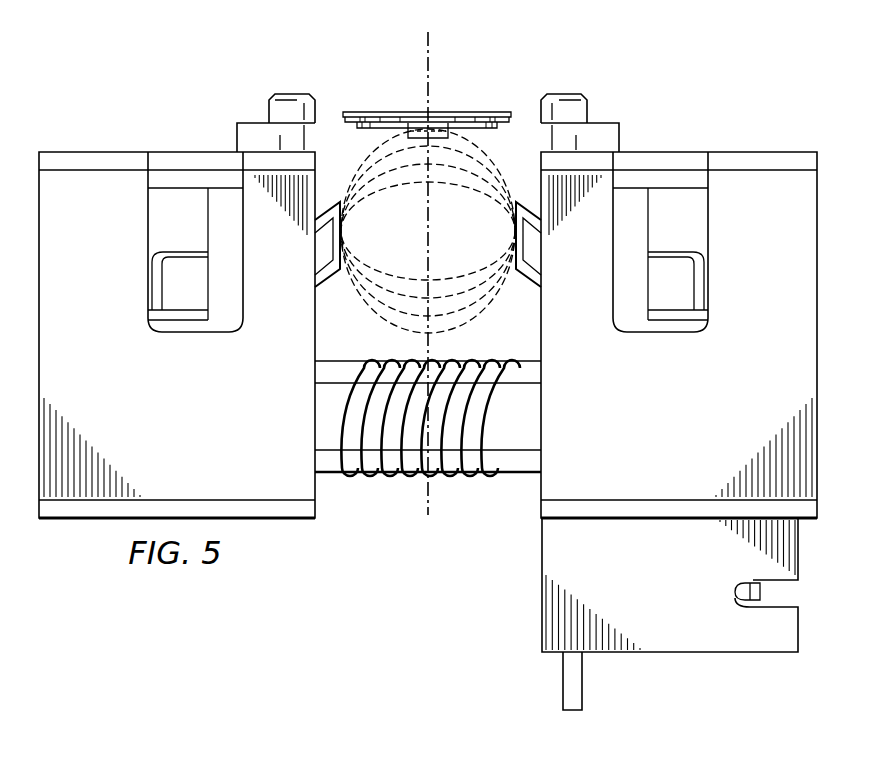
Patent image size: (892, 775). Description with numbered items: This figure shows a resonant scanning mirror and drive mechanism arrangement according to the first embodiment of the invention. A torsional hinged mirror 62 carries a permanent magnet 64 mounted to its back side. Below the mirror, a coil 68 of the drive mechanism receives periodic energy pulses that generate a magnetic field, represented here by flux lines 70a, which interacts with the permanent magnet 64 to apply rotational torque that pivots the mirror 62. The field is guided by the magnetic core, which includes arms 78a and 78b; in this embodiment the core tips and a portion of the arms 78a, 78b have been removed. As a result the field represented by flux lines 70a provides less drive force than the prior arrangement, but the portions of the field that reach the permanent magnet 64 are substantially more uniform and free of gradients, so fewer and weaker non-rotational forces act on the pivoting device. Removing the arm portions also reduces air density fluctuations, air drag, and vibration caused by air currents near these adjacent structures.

The torsional hinged mirror 62 is at (472, 112).
The permanent magnet 64 is at (417, 130).
The flux lines 70a is at (360, 163).
The arm 78a is at (323, 283).
The arm 78b is at (533, 283).
The coil 68 is at (382, 477).